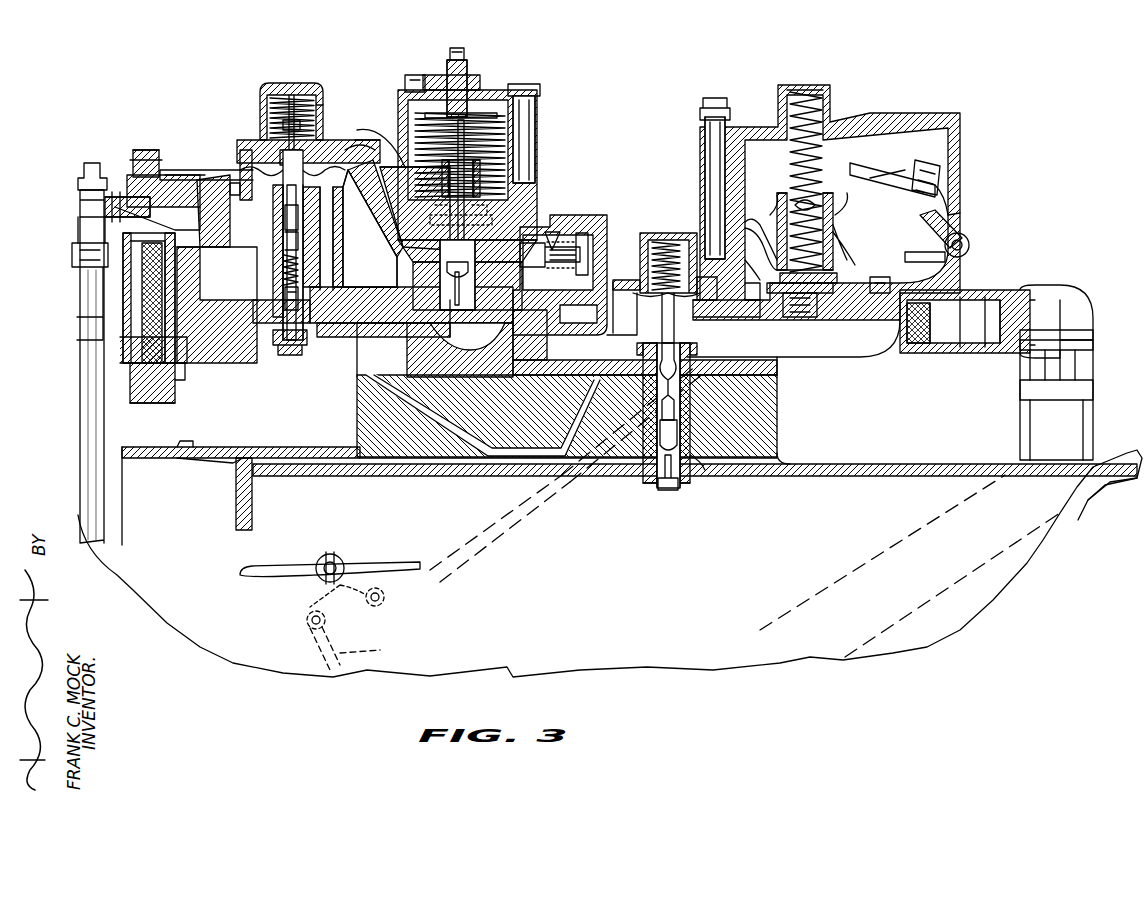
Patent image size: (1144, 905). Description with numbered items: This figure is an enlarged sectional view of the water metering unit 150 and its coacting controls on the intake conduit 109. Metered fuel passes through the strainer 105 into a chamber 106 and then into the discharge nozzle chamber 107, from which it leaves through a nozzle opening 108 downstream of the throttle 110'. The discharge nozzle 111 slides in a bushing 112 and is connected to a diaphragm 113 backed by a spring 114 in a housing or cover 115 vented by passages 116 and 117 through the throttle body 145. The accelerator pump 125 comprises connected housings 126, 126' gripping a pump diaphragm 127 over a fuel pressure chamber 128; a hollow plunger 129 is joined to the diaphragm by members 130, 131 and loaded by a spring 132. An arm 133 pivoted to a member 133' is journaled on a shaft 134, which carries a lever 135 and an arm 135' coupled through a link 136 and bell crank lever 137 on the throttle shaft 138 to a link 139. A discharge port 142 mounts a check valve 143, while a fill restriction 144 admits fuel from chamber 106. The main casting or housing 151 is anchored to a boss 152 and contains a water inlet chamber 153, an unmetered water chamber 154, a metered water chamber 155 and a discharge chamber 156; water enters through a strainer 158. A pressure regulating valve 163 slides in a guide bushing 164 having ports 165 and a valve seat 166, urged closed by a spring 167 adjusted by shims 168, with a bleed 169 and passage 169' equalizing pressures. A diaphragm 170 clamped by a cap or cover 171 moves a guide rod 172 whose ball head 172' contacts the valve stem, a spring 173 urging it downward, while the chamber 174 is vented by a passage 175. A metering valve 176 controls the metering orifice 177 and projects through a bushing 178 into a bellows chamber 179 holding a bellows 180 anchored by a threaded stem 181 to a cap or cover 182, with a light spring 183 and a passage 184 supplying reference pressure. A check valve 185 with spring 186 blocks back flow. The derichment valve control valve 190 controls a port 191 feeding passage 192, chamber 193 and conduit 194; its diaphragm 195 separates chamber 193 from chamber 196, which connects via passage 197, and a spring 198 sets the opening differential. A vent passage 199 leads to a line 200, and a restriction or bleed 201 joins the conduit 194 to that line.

The strainer 105 is at (926, 330).
The chamber 106 is at (856, 358).
The discharge nozzle chamber 107 is at (623, 472).
The nozzle opening 108 is at (679, 478).
The intake conduit 109 is at (857, 526).
The throttle 110' is at (318, 582).
The discharge nozzle 111 is at (652, 488).
The bushing 112 is at (697, 456).
The diaphragm 113 is at (686, 300).
The spring 114 is at (666, 244).
The housing or cover 115 is at (644, 242).
The passage 116 is at (650, 302).
The passage 117 is at (467, 460).
The accelerator pump 125 is at (955, 104).
The housing 126 is at (976, 196).
The housing 126' is at (931, 234).
The pump diaphragm 127 is at (777, 228).
The fuel pressure chamber 128 is at (877, 295).
The hollow plunger 129 is at (780, 190).
The member 130 is at (757, 268).
The member 131 is at (862, 240).
The spring 132 is at (805, 137).
The arm 133 is at (887, 168).
The member 133' is at (760, 190).
The shaft 134 is at (940, 188).
The lever 135 is at (897, 154).
The arm 135' is at (983, 214).
The link 136 is at (945, 268).
The bell crank lever 137 is at (366, 604).
The throttle shaft 138 is at (336, 555).
The link 139 is at (361, 640).
The discharge port 142 is at (768, 308).
The check valve 143 is at (800, 318).
The fill restriction 144 is at (851, 206).
The throttle body 145 is at (268, 447).
The water metering unit 150 is at (342, 119).
The main casting or housing 151 is at (352, 348).
The boss 152 is at (360, 407).
The water inlet chamber 153 is at (252, 330).
The unmetered water chamber 154 is at (372, 268).
The metered water chamber 155 is at (520, 272).
The discharge chamber 156 is at (593, 309).
The strainer 158 is at (152, 280).
The pressure regulating valve 163 is at (284, 241).
The valve housing or guide bushing 164 is at (284, 259).
The port 165 is at (284, 226).
The valve seat 166 is at (377, 144).
The spring 167 is at (284, 279).
The shims 168 is at (294, 348).
The bleed 169 is at (340, 238).
The passage 169' is at (363, 230).
The diaphragm 170 is at (356, 140).
The cap or cover 171 is at (278, 94).
The guide rod 172 is at (305, 120).
The ball head 172' is at (314, 150).
The spring 173 is at (267, 108).
The chamber 174 is at (311, 112).
The passage 175 is at (411, 160).
The metering valve 176 is at (477, 268).
The metering orifice 177 is at (388, 302).
The bushing 178 is at (447, 225).
The bellows chamber 179 is at (510, 186).
The bellows 180 is at (490, 150).
The threaded stem 181 is at (469, 73).
The cap or cover 182 is at (484, 95).
The spring 183 is at (469, 220).
The passage 184 is at (413, 397).
The check valve 185 is at (590, 250).
The spring 186 is at (567, 236).
The derichment valve control valve 190 is at (118, 228).
The port 191 is at (80, 204).
The passage 192 is at (125, 247).
The chamber 193 is at (193, 170).
The conduit 194 is at (80, 348).
The diaphragm 195 is at (203, 247).
The chamber 196 is at (238, 175).
The passage 197 is at (247, 160).
The spring 198 is at (292, 153).
The vent passage 199 is at (205, 172).
The line 200 is at (147, 158).
The restriction or bleed 201 is at (133, 188).